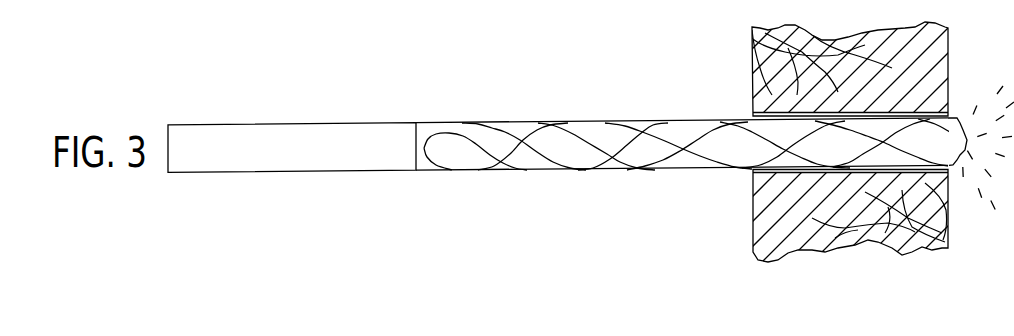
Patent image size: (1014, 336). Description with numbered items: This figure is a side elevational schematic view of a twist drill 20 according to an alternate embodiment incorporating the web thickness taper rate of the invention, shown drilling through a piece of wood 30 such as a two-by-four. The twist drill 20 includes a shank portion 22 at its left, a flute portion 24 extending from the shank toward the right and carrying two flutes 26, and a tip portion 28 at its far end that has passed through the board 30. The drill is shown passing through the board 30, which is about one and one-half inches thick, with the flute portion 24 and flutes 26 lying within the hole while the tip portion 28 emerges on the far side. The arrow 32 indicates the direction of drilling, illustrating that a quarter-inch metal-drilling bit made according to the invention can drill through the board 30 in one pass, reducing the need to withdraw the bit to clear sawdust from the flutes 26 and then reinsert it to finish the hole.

The twist drill 20 is at (509, 100).
The shank portion 22 is at (247, 119).
The flute portion 24 is at (687, 134).
The flutes 26 is at (584, 160).
The tip portion 28 is at (955, 118).
The piece of wood 30 is at (753, 60).
The arrow 32 is at (724, 211).